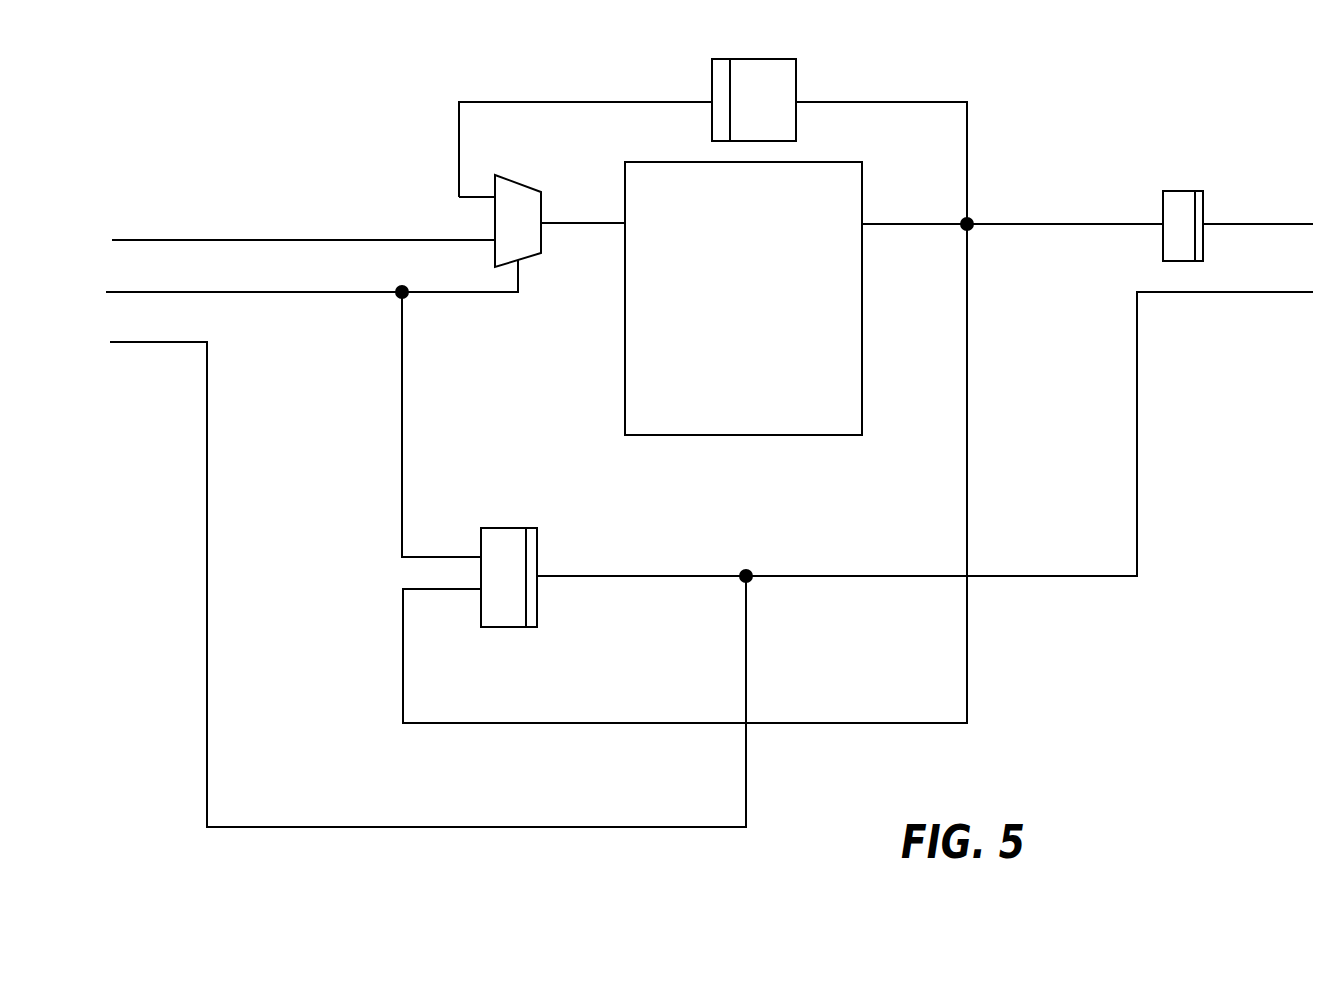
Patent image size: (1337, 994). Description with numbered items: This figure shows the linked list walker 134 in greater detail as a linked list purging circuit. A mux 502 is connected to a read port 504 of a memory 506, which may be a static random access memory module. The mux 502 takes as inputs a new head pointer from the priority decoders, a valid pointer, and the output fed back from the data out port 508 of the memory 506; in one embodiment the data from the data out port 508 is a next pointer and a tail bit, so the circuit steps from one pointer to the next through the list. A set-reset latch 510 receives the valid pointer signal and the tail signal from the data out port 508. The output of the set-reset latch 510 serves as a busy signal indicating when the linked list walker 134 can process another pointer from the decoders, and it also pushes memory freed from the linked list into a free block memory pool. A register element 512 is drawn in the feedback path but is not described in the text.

The linked list walker 134 is at (1056, 805).
The mux 502 is at (518, 181).
The read port 504 is at (623, 223).
The memory 506 is at (743, 435).
The data out port 508 is at (870, 226).
The set-reset latch 510 is at (538, 542).
The register 512 is at (770, 59).